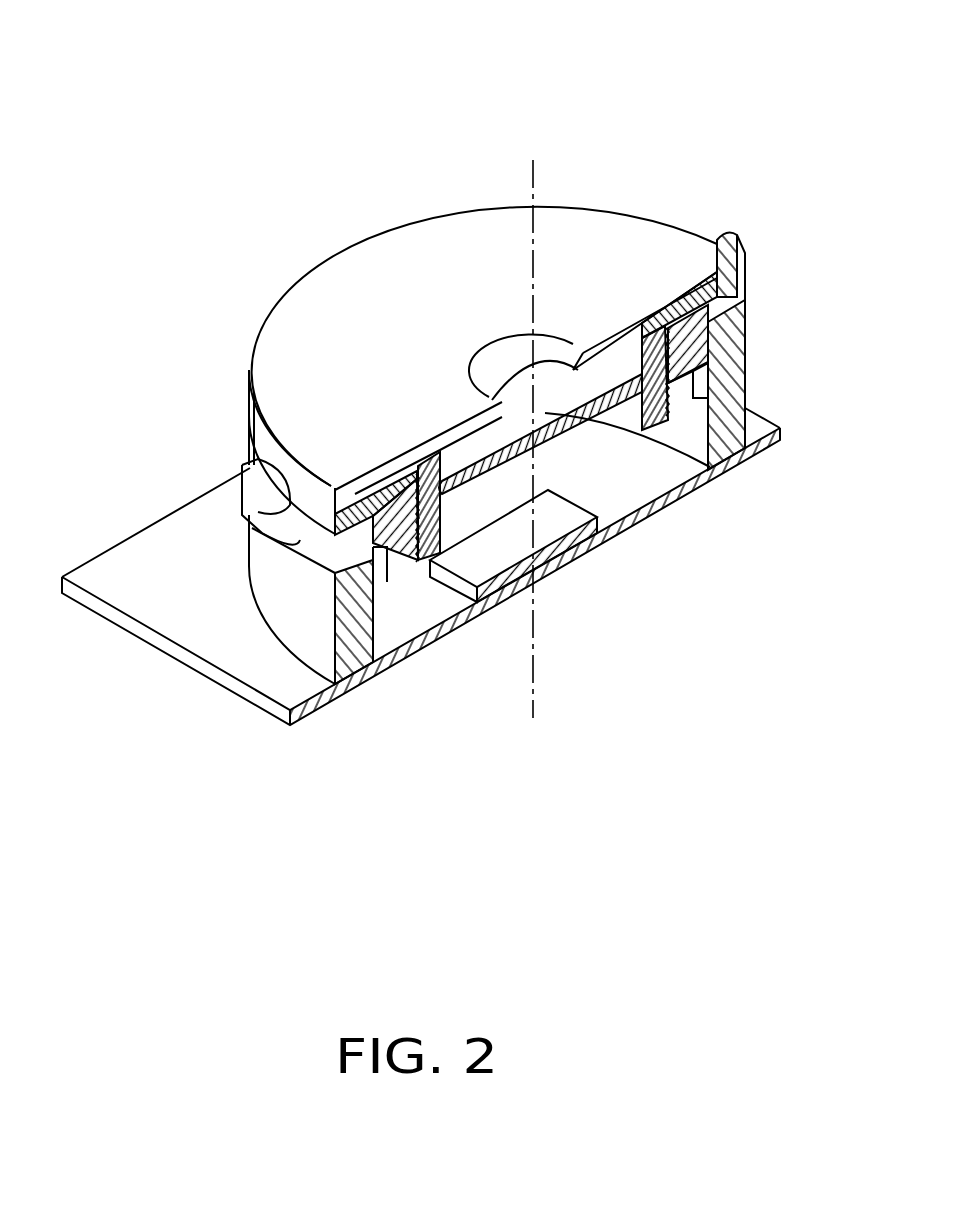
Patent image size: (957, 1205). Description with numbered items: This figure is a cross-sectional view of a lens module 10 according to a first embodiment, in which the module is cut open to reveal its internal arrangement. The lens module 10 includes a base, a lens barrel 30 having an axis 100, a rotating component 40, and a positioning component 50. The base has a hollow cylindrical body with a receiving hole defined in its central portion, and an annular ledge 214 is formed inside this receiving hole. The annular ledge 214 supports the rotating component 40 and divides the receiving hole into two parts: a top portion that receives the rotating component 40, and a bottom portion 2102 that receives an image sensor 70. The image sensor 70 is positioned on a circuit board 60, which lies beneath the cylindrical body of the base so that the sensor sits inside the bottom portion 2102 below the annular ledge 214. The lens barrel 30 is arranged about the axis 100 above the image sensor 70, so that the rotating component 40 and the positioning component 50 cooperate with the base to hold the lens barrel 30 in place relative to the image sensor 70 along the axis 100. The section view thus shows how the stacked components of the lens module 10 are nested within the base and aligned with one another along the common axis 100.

The lens module 10 is at (493, 39).
The axis 100 is at (537, 176).
The lens barrel 30 is at (643, 257).
The positioning component 50 is at (744, 292).
The rotating component 40 is at (745, 330).
The annular ledge 214 is at (748, 372).
The bottom portion 2102 is at (670, 437).
The image sensor 70 is at (557, 525).
The circuit board 60 is at (323, 690).